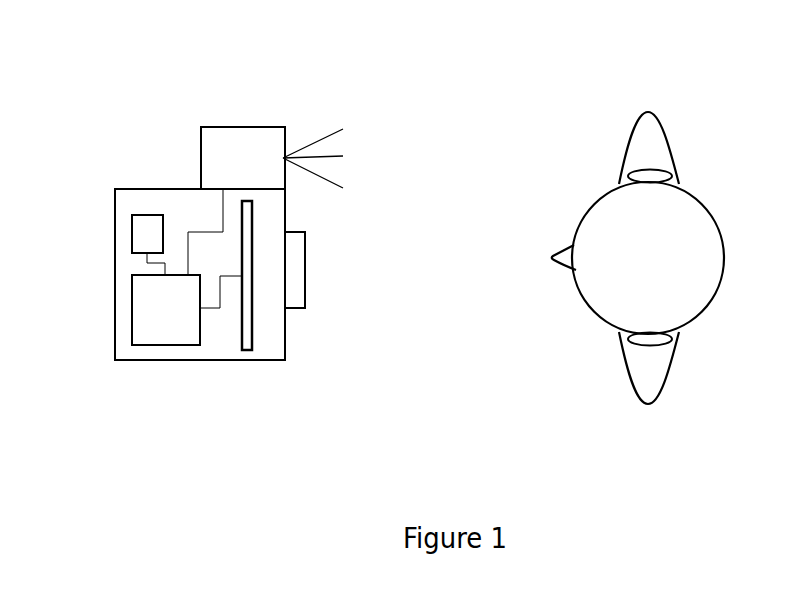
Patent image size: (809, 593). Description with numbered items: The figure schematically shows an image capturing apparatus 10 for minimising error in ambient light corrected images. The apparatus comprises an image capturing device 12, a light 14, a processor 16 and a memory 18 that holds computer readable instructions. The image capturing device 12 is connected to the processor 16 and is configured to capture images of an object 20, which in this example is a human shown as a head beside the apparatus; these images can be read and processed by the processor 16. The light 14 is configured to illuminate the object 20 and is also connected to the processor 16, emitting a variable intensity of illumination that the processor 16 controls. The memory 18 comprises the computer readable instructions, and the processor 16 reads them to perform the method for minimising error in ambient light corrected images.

The image capturing apparatus 10 is at (141, 104).
The image capturing device 12 is at (252, 333).
The light 14 is at (257, 157).
The processor 16 is at (142, 332).
The memory 18 is at (130, 233).
The object 20 is at (697, 247).